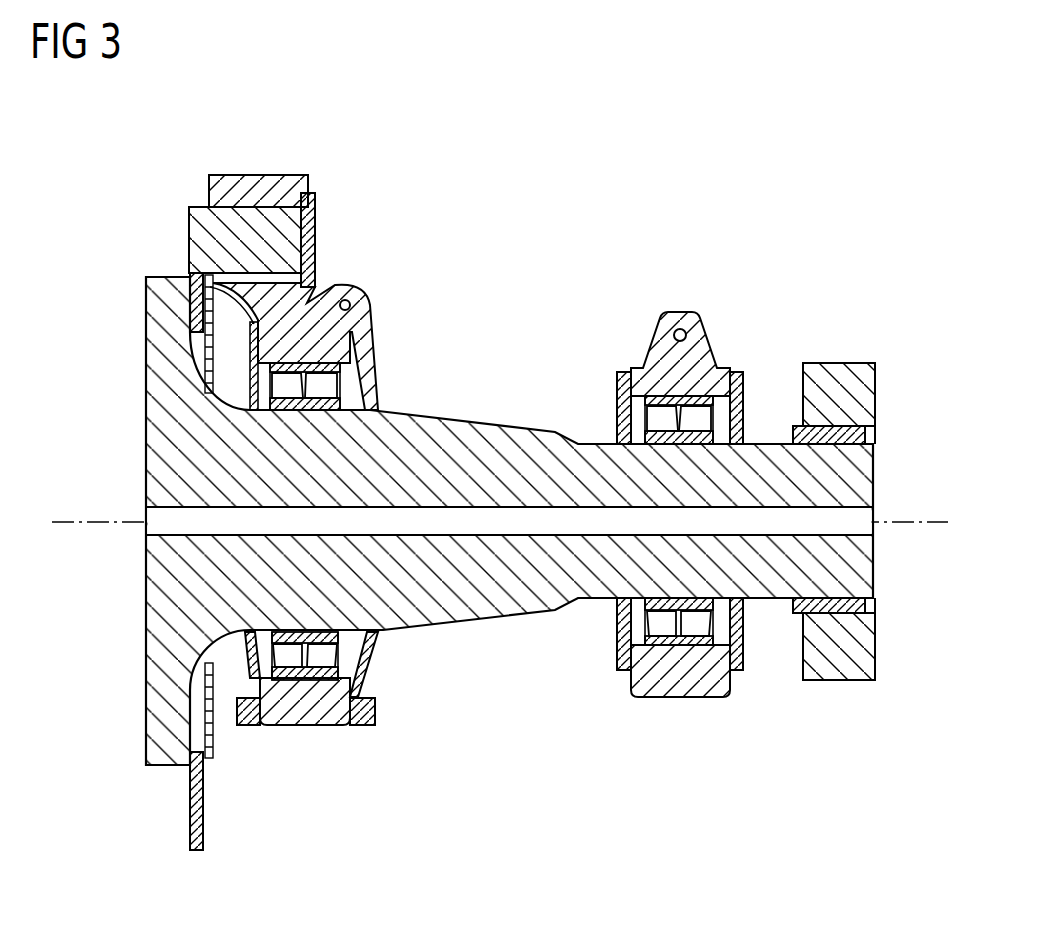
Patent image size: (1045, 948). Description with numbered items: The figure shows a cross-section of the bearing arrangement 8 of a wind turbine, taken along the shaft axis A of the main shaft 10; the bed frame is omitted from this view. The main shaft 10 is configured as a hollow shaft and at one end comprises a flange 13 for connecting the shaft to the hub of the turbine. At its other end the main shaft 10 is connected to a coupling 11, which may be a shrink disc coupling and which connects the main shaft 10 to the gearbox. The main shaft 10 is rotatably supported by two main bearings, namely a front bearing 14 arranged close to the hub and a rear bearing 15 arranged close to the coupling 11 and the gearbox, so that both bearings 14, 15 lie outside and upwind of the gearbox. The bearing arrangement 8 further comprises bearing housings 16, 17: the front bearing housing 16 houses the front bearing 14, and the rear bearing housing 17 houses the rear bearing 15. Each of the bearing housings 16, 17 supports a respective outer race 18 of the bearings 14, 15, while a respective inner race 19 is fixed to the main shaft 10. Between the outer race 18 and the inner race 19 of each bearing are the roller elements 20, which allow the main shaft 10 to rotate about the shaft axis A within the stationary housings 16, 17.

The bearing arrangement 8 is at (763, 193).
The main shaft 10 is at (157, 406).
The coupling 11 is at (835, 378).
The flange 13 is at (163, 765).
The front bearing 14 is at (388, 630).
The rear bearing 15 is at (606, 614).
The front bearing housing 16 is at (328, 330).
The rear bearing housing 17 is at (683, 312).
The outer race 18 is at (282, 672).
The inner race 19 is at (297, 632).
The roller elements 20 is at (322, 660).
The shaft axis A is at (62, 520).